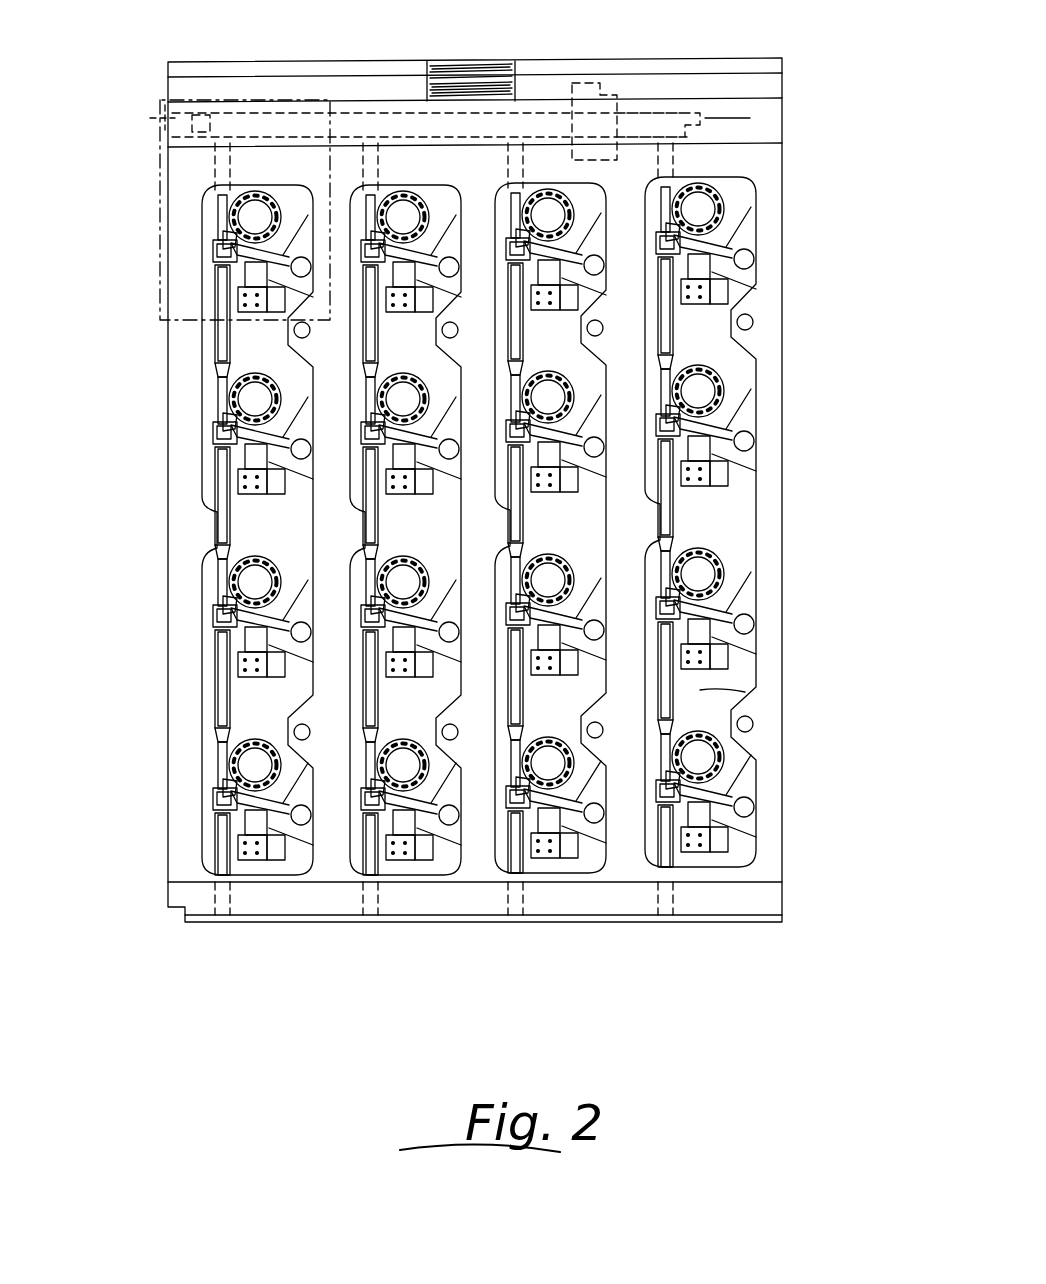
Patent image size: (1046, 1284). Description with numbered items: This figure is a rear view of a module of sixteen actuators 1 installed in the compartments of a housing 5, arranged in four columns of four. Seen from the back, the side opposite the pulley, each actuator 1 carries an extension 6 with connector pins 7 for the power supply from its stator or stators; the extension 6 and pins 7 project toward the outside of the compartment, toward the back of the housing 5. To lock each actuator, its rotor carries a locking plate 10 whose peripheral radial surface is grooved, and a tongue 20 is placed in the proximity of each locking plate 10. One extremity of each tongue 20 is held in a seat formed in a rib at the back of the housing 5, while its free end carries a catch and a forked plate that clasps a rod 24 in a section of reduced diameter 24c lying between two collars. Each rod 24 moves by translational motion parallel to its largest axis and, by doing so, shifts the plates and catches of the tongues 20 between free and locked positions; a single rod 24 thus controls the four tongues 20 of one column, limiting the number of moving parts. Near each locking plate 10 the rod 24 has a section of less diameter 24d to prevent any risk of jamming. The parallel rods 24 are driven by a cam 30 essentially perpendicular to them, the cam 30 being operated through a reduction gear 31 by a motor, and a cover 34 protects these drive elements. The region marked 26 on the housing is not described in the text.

The actuator 1 is at (758, 186).
The housing 5 is at (792, 125).
The extension 6 is at (722, 296).
The connector pins 7 is at (245, 683).
The locking plate 10 is at (728, 215).
The tongue 20 is at (700, 412).
The rod 24 is at (662, 522).
The section of reduced diameter 24c is at (212, 448).
The section of less diameter 24d is at (213, 590).
The support plate 26 is at (722, 692).
The cam 30 is at (405, 110).
The reduction gear 31 is at (597, 80).
The cover 34 is at (738, 60).